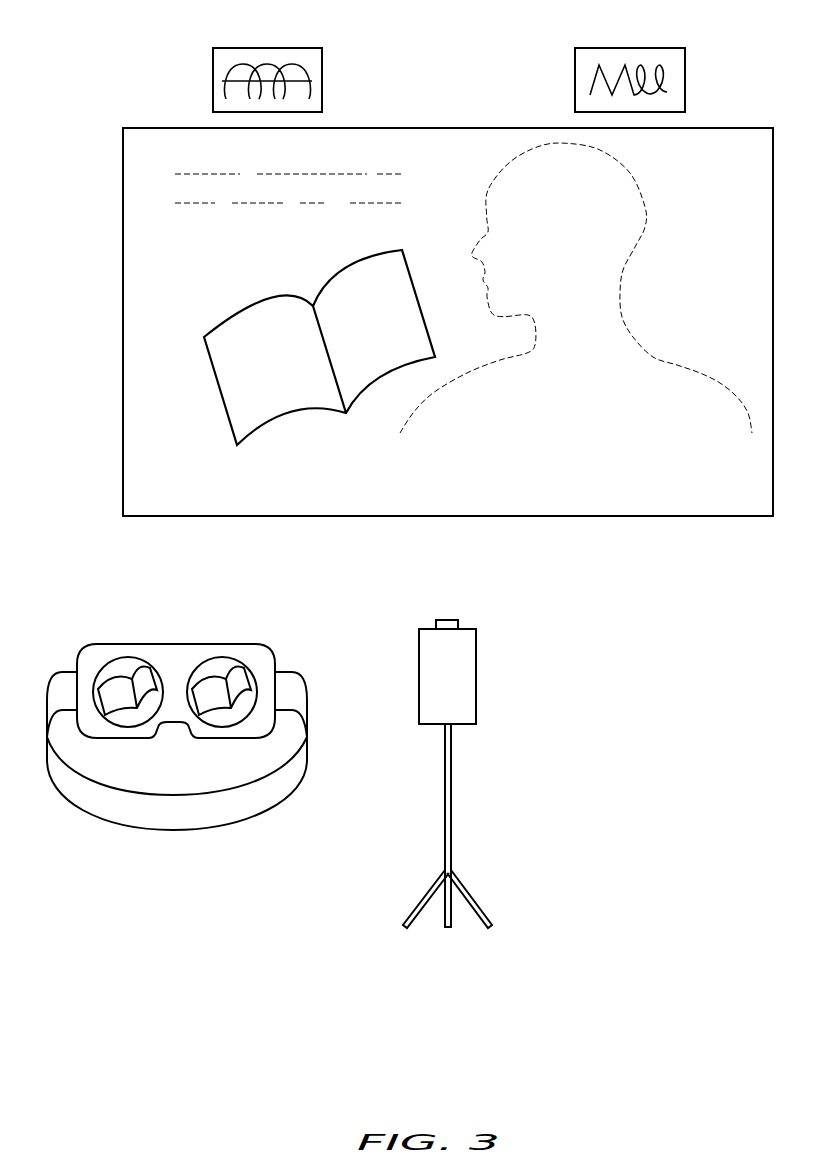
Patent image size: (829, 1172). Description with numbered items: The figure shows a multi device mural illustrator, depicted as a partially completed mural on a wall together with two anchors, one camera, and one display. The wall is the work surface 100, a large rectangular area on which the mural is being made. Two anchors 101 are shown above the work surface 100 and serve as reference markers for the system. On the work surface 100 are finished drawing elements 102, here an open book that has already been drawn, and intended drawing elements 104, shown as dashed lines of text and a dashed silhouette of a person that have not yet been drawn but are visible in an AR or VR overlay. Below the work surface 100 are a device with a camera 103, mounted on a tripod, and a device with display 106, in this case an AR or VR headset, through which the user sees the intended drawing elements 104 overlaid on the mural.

The work surface 100 is at (123, 183).
The anchors 101 is at (242, 48).
The finished drawing elements 102 is at (230, 313).
The device with a camera 103 is at (477, 668).
The intended drawing elements 104 is at (205, 173).
The device with display 106 is at (162, 644).